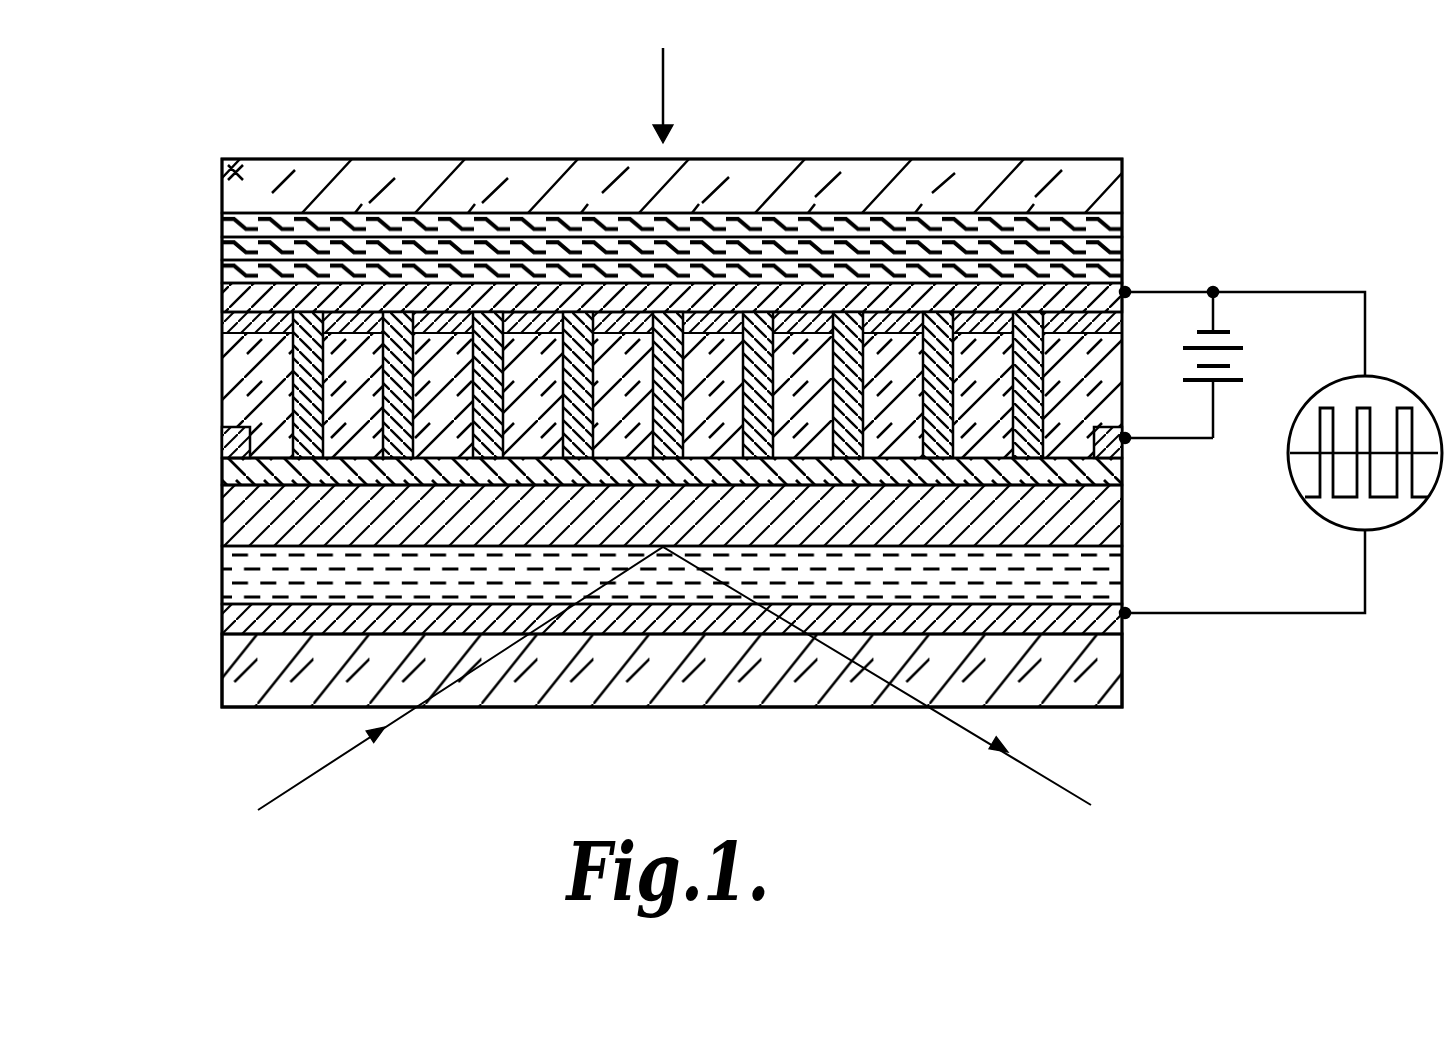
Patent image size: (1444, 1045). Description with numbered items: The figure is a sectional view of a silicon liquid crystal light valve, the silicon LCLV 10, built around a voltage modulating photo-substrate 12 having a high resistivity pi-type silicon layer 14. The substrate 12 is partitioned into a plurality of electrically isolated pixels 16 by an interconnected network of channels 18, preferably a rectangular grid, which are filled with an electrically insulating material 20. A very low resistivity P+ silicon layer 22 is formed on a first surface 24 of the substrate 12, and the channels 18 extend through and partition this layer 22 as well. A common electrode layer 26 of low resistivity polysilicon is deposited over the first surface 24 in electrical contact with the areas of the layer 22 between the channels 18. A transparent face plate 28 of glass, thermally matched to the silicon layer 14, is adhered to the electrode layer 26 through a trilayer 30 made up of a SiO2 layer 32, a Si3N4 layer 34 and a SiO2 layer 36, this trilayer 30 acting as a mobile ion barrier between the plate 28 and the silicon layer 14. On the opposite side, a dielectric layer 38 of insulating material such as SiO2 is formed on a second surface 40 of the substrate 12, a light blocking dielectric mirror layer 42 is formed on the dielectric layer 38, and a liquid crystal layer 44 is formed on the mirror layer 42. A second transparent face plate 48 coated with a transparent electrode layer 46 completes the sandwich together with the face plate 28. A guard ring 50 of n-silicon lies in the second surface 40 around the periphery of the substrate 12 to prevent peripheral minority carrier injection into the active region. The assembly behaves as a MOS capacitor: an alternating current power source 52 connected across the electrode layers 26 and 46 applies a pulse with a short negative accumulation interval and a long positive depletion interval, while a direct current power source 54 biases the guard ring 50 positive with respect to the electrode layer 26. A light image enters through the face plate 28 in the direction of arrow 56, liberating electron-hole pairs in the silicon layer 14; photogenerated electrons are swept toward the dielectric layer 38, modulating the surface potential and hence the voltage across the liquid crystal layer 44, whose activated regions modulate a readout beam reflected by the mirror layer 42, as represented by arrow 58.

The silicon LCLV 10 is at (185, 372).
The voltage modulating photo-substrate 12 is at (192, 419).
The pi-type silicon layer 14 is at (222, 430).
The electrically isolated pixels 16 is at (360, 355).
The channels 18 is at (222, 458).
The electrically insulating material 20 is at (387, 405).
The P+ silicon layer 22 is at (222, 325).
The first surface 24 is at (1118, 283).
The common electrode layer 26 is at (1123, 242).
The transparent face plate 28 is at (222, 159).
The trilayer 30 is at (606, 216).
The SiO2 layer 32 is at (222, 282).
The Si3N4 layer 34 is at (222, 247).
The SiO2 layer 36 is at (222, 225).
The dielectric layer 38 is at (1127, 475).
The second surface 40 is at (1127, 517).
The dielectric mirror layer 42 is at (997, 460).
The liquid crystal layer 44 is at (222, 577).
The transparent electrode layer 46 is at (222, 621).
The transparent face plate 48 is at (230, 690).
The guard ring 50 is at (222, 460).
The power source 52 is at (1312, 513).
The direct current power source 54 is at (1240, 380).
The arrow 56 is at (705, 95).
The arrow 58 is at (315, 776).